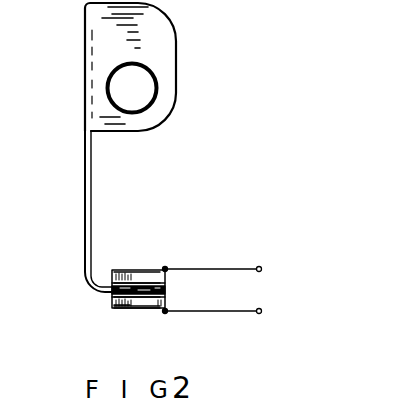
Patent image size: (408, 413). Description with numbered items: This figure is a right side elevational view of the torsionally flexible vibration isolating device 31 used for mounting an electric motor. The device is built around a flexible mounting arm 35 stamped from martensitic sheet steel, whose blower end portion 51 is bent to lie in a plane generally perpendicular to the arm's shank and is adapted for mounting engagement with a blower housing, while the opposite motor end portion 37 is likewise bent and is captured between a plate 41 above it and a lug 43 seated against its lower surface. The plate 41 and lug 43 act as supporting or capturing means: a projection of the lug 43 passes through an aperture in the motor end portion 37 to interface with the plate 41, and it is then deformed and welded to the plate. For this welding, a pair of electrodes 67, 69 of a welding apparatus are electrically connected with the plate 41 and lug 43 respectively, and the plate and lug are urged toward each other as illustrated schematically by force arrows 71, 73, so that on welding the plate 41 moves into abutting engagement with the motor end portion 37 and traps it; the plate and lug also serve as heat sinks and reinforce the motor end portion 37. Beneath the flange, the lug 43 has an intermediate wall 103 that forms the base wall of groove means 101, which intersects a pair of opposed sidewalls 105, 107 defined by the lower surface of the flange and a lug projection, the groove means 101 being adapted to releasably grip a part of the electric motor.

The torsionally flexible vibration isolating device 31 is at (160, 186).
The flexible mounting arm 35 is at (85, 153).
The motor end portion 37 is at (166, 284).
The plate 41 is at (132, 270).
The lug 43 is at (117, 309).
The blower end portion 51 is at (160, 38).
The electrode 67 is at (166, 267).
The electrode 69 is at (166, 313).
The force arrow 71 is at (146, 264).
The force arrow 73 is at (147, 314).
The groove means 101 is at (111, 292).
The intermediate wall 103 is at (132, 309).
The sidewall 105 is at (118, 273).
The sidewall 107 is at (112, 308).